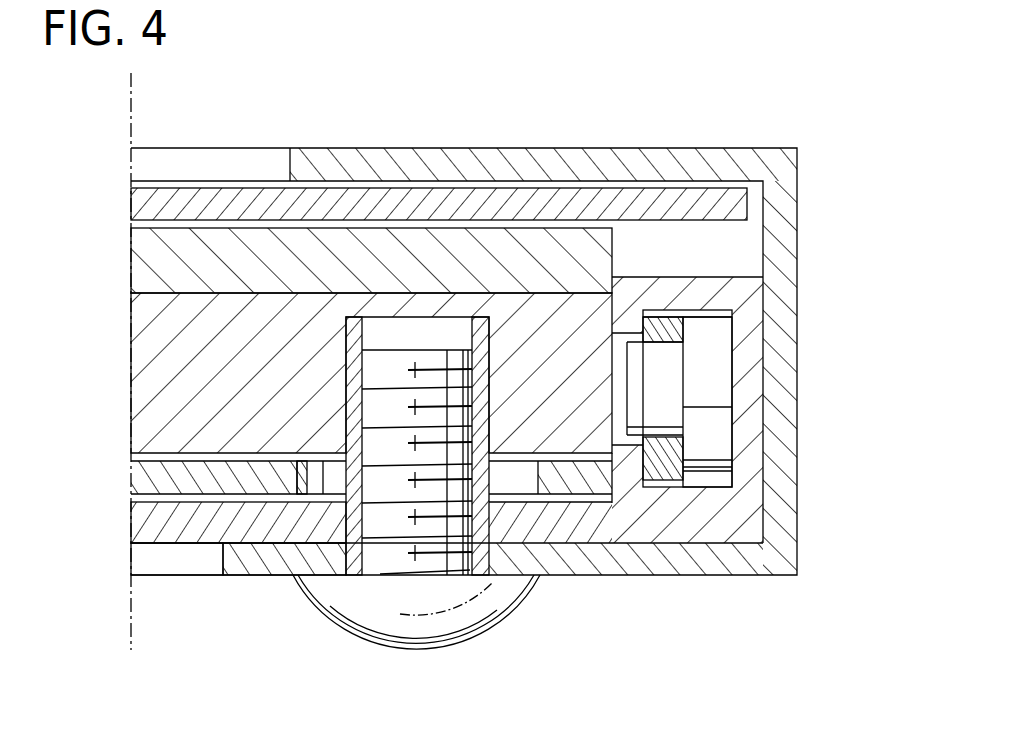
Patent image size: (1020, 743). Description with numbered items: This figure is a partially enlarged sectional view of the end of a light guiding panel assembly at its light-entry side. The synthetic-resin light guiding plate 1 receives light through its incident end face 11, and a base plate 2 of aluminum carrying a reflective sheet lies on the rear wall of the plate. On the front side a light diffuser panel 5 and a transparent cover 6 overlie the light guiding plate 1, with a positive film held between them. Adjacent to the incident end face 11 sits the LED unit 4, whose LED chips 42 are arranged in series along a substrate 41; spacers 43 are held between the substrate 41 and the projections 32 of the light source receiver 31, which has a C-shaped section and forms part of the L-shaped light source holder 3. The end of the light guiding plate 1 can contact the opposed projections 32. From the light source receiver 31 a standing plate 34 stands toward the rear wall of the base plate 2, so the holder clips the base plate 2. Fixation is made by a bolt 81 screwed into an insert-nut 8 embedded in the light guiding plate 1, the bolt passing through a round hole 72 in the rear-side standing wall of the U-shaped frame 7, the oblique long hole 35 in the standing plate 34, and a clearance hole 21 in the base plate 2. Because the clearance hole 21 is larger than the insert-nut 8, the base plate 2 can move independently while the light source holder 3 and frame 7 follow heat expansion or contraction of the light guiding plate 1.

The light guiding plate 1 is at (267, 317).
The base plate 2 is at (143, 483).
The light source holder 3 is at (167, 530).
The standing plate 34 is at (177, 586).
The LED unit 4 is at (775, 85).
The light diffuser panel 5 is at (202, 236).
The transparent cover 6 is at (445, 205).
The frame 7 is at (520, 162).
The insert-nut 8 is at (408, 327).
The incident end face 11 is at (640, 424).
The clearance hole 21 is at (302, 490).
The light source receiver 31 is at (750, 400).
The projections 32 is at (627, 323).
The long hole 35 is at (300, 503).
The substrate 41 is at (704, 340).
The LED chips 42 is at (684, 316).
The spacers 43 is at (660, 363).
The round hole 72 is at (468, 556).
The bolt 81 is at (417, 627).